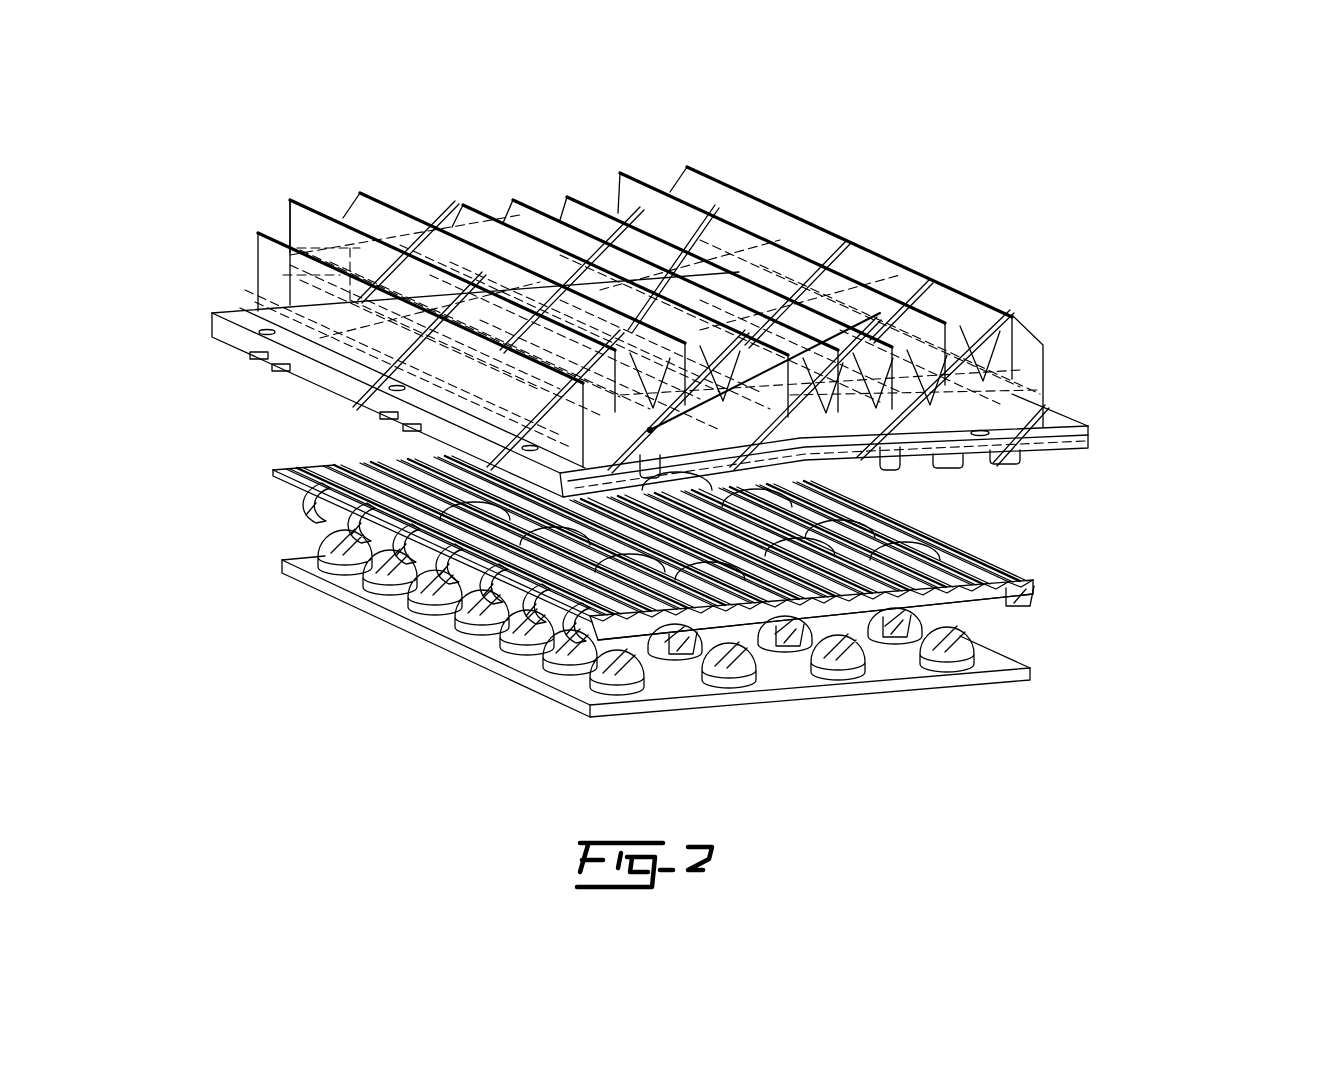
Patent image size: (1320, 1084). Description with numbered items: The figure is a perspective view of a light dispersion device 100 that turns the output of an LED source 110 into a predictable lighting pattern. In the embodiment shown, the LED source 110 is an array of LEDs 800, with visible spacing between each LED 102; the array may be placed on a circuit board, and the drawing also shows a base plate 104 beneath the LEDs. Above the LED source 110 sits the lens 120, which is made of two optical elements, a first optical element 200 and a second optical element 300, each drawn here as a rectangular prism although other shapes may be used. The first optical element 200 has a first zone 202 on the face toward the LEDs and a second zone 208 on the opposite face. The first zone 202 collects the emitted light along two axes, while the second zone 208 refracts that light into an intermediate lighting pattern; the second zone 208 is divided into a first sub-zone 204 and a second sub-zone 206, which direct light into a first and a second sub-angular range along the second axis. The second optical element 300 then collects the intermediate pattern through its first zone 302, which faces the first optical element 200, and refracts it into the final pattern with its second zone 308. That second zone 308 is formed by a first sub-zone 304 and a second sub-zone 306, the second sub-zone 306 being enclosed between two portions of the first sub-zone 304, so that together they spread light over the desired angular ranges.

The light dispersion device 100 is at (1177, 282).
The LED 102 is at (557, 649).
The substrate / base plate 104 is at (684, 633).
The LED source 110 is at (522, 747).
The lens 120 is at (1101, 283).
The first optical element 200 is at (673, 573).
The first zone 202 is at (1003, 607).
The first sub-zone 204 is at (925, 531).
The second sub-zone 206 is at (1027, 566).
The second zone 208 is at (350, 533).
The second optical element 300 is at (641, 296).
The first zone 302 is at (1045, 392).
The first sub-zone 304 is at (814, 298).
The second sub-zone 306 is at (384, 180).
The second zone 308 is at (250, 205).
The array of LEDs 800 is at (370, 661).